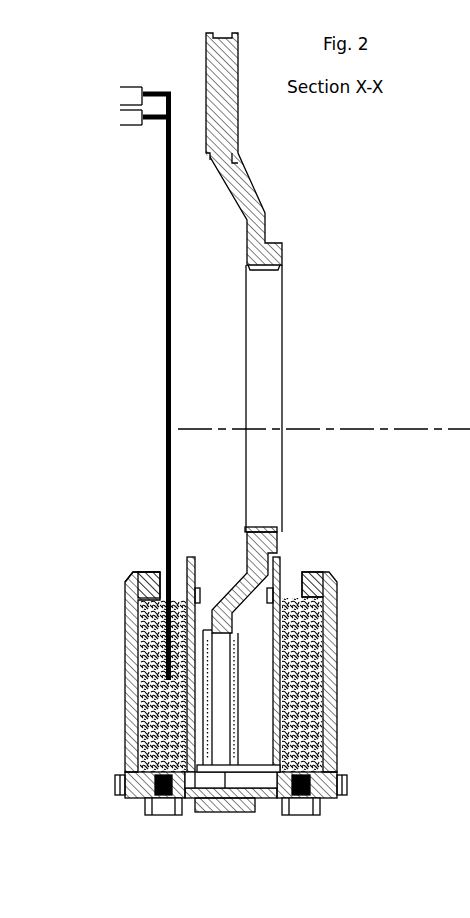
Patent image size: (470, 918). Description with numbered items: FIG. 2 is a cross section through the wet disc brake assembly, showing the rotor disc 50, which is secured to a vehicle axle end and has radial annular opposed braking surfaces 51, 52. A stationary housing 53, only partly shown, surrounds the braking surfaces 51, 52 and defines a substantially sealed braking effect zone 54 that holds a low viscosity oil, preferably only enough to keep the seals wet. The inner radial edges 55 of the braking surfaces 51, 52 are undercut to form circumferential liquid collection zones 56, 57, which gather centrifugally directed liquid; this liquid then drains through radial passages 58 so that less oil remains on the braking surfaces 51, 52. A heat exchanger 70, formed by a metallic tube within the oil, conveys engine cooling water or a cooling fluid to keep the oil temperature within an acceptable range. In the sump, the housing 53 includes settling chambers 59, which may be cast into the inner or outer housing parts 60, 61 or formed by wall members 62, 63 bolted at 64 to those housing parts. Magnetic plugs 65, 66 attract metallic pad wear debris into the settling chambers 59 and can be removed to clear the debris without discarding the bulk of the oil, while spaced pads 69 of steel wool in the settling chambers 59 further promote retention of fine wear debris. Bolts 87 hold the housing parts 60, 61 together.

The rotor disc 50 is at (270, 332).
The braking surface 51 is at (242, 138).
The braking surface 52 is at (210, 135).
The stationary housing 53 is at (352, 693).
The braking effect zone 54 is at (255, 737).
The inner radial edge 55 is at (207, 162).
The liquid collection zone 56 is at (242, 172).
The liquid collection zone 57 is at (207, 167).
The radial passage 58 is at (220, 752).
The settling chamber 59 is at (137, 640).
The inner housing part 60 is at (335, 723).
The outer housing part 61 is at (127, 723).
The wall member 62 is at (280, 558).
The wall member 63 is at (127, 597).
The bolt 64 is at (160, 572).
The magnetic plug 65 is at (302, 815).
The magnetic plug 66 is at (167, 812).
The pad 69 is at (143, 670).
The heat exchanger 70 is at (162, 288).
The bolt 87 is at (343, 792).